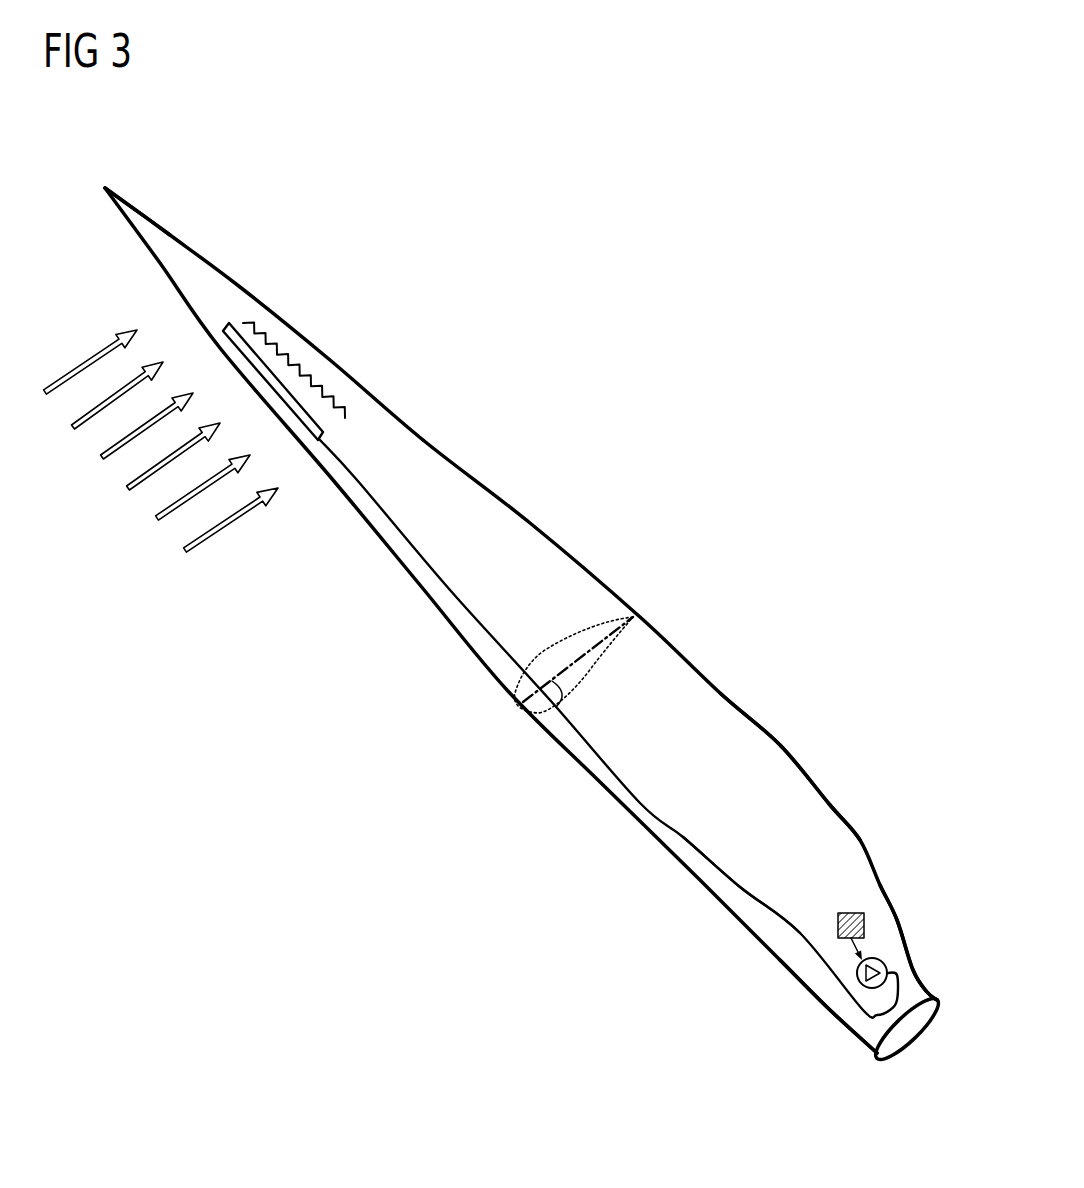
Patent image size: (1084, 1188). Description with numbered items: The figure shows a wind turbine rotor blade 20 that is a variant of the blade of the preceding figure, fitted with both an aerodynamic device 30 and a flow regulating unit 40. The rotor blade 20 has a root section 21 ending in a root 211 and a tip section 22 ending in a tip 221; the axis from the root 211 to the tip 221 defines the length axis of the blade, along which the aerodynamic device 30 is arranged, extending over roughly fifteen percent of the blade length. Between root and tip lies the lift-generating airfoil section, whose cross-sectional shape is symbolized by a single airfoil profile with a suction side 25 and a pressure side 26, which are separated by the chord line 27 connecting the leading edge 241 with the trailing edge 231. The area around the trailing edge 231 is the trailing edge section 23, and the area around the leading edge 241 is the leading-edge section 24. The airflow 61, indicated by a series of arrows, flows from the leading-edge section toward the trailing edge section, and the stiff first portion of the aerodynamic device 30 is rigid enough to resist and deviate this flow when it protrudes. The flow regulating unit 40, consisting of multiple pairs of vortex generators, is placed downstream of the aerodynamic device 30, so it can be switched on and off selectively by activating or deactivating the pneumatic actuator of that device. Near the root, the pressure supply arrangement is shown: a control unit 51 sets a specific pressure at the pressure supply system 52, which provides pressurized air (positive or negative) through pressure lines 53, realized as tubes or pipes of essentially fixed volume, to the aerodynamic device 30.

The rotor blade 20 is at (528, 613).
The root section 21 is at (908, 987).
The root 211 is at (920, 1040).
The tip section 22 is at (172, 243).
The tip 221 is at (105, 185).
The trailing edge section 23 is at (712, 698).
The trailing edge 231 is at (782, 746).
The leading-edge section 24 is at (587, 770).
The leading edge 241 is at (613, 807).
The suction side 25 is at (568, 632).
The pressure side 26 is at (597, 658).
The chord line 27 is at (563, 694).
The aerodynamic device 30 is at (223, 333).
The flow regulating unit 40 is at (300, 372).
The control unit 51 is at (852, 913).
The pressure supply system 52 is at (875, 958).
The pressure lines 53 is at (740, 887).
The airflow 61 is at (223, 527).